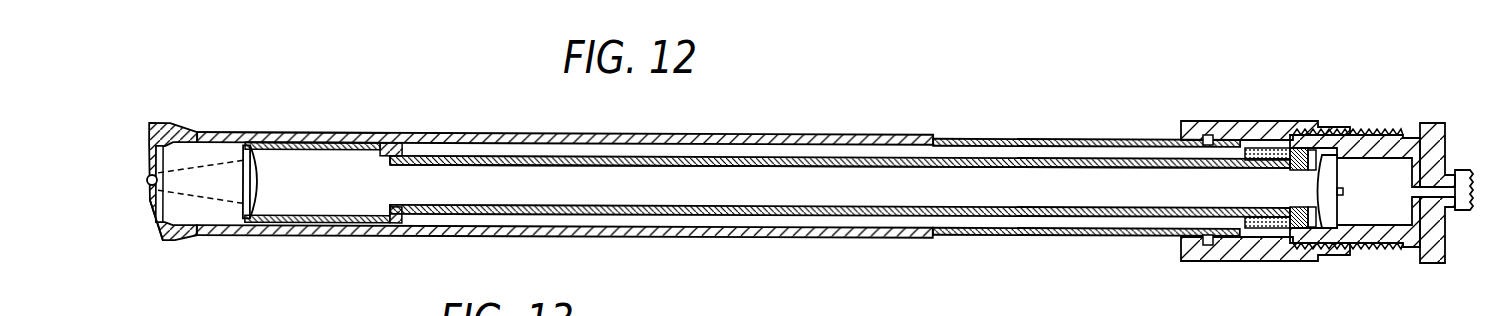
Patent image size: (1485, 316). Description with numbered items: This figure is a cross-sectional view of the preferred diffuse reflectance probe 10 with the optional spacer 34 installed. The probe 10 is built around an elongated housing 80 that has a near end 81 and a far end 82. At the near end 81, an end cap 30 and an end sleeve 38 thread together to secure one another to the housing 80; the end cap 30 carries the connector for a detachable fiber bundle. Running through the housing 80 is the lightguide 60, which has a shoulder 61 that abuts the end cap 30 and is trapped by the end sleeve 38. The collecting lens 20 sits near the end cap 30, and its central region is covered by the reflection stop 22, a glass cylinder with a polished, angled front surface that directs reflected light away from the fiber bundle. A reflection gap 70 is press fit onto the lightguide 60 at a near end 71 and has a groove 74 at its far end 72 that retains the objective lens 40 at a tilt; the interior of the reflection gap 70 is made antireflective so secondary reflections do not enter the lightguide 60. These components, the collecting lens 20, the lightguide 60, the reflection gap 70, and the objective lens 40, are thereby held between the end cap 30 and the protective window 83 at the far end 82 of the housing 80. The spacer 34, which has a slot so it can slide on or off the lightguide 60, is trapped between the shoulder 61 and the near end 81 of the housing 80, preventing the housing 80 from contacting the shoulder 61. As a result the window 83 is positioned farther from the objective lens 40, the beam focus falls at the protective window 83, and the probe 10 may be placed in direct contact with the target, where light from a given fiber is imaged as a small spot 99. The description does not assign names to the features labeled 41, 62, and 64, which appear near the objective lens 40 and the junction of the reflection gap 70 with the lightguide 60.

The diffuse reflectance probe 10 is at (1003, 125).
The collecting lens 20 is at (1325, 157).
The reflection stop 22 is at (1342, 188).
The end cap 30 is at (1438, 138).
The spacer 34 is at (1285, 150).
The end sleeve 38 is at (1230, 121).
The objective lens 40 is at (247, 190).
The lens convex surface 41 is at (257, 182).
The lightguide 60 is at (775, 160).
The shoulder 61 is at (1297, 228).
The coupling block 62 is at (378, 147).
The inner tube bore 64 is at (873, 172).
The reflection gap 70 is at (300, 132).
The near end 71 is at (405, 155).
The far end 72 is at (226, 144).
The groove 74 is at (282, 133).
The elongated housing 80 is at (845, 135).
The near end 81 is at (1253, 148).
The far end 82 is at (147, 124).
The protective window 83 is at (150, 200).
The spot 99 is at (150, 177).